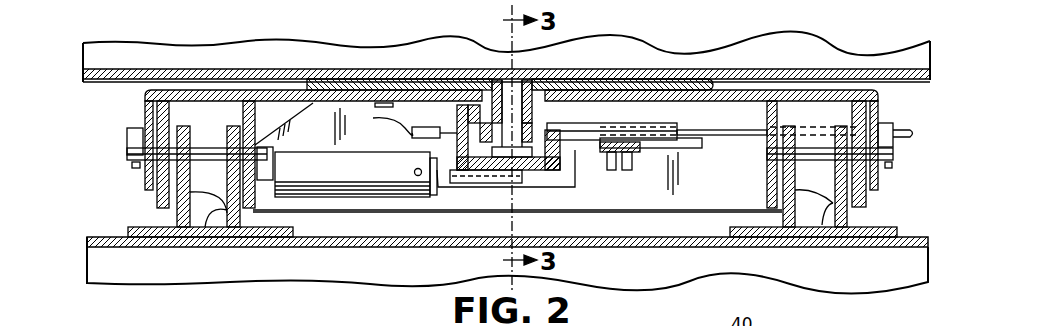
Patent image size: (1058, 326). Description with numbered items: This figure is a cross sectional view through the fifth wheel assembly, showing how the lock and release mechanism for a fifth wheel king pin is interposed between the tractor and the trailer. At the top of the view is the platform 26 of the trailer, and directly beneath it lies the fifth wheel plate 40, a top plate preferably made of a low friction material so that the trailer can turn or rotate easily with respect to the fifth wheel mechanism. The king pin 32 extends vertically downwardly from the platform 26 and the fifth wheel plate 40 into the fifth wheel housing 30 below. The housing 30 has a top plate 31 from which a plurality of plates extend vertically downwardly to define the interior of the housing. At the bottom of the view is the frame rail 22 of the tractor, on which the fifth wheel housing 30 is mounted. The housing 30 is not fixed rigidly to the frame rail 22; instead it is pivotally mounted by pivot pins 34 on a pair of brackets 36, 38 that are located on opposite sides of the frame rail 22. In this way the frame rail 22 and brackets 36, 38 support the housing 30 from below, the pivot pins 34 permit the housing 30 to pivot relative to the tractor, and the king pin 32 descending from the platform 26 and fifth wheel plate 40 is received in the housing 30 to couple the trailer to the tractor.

The frame rail 22 is at (635, 247).
The platform 26 is at (208, 69).
The fifth wheel housing 30 is at (122, 94).
The top plate 31 is at (855, 93).
The king pin 32 is at (478, 79).
The pivot pins 34 is at (207, 153).
The bracket 36 is at (213, 228).
The bracket 38 is at (818, 228).
The fifth wheel plate 40 is at (688, 79).